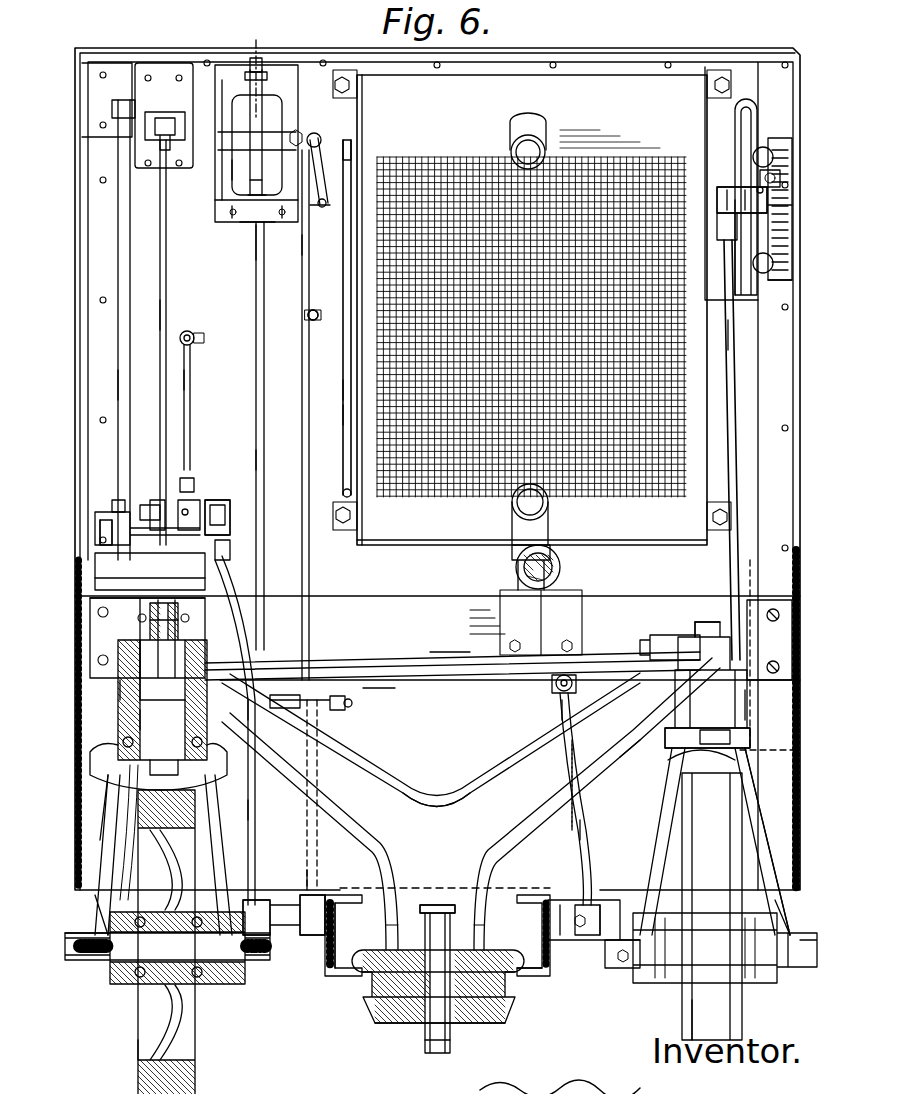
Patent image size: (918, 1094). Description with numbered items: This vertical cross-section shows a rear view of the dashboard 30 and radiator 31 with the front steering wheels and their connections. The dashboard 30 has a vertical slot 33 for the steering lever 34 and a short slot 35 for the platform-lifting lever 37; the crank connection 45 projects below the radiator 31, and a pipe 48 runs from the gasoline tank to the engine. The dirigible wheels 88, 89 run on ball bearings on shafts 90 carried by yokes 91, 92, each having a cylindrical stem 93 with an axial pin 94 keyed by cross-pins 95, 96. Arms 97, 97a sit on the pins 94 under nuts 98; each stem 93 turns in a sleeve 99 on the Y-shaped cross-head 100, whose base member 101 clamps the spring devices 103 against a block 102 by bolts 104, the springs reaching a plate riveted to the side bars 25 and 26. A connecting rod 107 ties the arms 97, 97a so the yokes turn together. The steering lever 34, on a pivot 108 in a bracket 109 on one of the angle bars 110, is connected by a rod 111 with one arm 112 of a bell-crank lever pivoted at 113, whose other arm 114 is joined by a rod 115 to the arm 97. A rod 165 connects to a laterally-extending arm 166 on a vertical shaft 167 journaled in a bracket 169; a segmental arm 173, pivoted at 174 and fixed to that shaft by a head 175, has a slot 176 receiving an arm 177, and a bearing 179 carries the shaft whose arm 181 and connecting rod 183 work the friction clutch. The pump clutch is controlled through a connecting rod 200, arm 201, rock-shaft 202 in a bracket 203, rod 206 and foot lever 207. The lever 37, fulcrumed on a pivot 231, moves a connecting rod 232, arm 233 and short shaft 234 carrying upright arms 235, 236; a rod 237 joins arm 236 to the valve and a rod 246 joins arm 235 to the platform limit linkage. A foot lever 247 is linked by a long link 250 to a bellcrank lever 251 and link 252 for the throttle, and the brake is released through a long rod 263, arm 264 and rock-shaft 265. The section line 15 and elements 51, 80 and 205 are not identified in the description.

The section line 15 is at (232, 38).
The side bar 25 is at (545, 975).
The side bar 26 is at (333, 980).
The dashboard 30 is at (127, 386).
The radiator 31 is at (348, 490).
The vertical slot 33 is at (758, 116).
The steering lever 34 is at (762, 188).
The short slot 35 is at (165, 118).
The lever 37 is at (152, 112).
The crank connection 45 is at (558, 567).
The pipe 48 is at (344, 408).
The fork 51 is at (805, 732).
The lever 80 is at (302, 140).
The dirigible wheel 88 is at (720, 1013).
The dirigible wheel 89 is at (138, 1050).
The shaft 90 is at (100, 950).
The yoke 91 is at (780, 920).
The yoke 92 is at (90, 898).
The cylindrical stem 93 is at (123, 763).
The pin 94 is at (168, 742).
The cross-pin 95 is at (160, 702).
The cross-pin 96 is at (163, 700).
The arm 97 is at (143, 648).
The arm 97a is at (697, 647).
The nut 98 is at (157, 625).
The sleeve 99 is at (127, 688).
The Y-shaped cross-head 100 is at (400, 797).
The base member 101 is at (457, 947).
The block 102 is at (390, 1013).
The spring devices 103 is at (368, 985).
The bolts 104 is at (425, 1045).
The connecting rod 107 is at (447, 657).
The pivot 108 is at (718, 192).
The bracket 109 is at (788, 213).
The angle bar 110 is at (786, 300).
The rod 111 is at (732, 334).
The arm of bell-crank lever 112 is at (748, 750).
The pivot 113 is at (573, 778).
The arm of bell-crank lever 114 is at (640, 733).
The rod 115 is at (363, 688).
The rod 165 is at (337, 706).
The laterally-extending arm 166 is at (293, 703).
The vertical shaft 167 is at (262, 460).
The bracket 169 is at (250, 224).
The segmental arm 173 is at (288, 78).
The pivot 174 is at (268, 66).
The head 175 is at (248, 228).
The slot 176 is at (252, 197).
The arm 177 is at (250, 188).
The bearing 179 is at (240, 170).
The arm 181 is at (305, 243).
The connecting rod 183 is at (308, 322).
The connecting rod 200 is at (198, 340).
The arm 201 is at (190, 378).
The rock-shaft 202 is at (146, 505).
The bracket 203 is at (125, 582).
The lever 205 is at (218, 513).
The rod 206 is at (220, 567).
The foot lever 207 is at (258, 913).
The pivot 231 is at (112, 112).
The connecting rod 232 is at (167, 318).
The arm 233 is at (157, 577).
The short shaft 234 is at (226, 550).
The upright arm 235 is at (108, 533).
The upright arm 236 is at (187, 510).
The rod 237 is at (189, 478).
The rod 246 is at (118, 524).
The foot lever 247 is at (293, 937).
The long link 250 is at (340, 388).
The bellcrank lever 251 is at (352, 140).
The link 252 is at (325, 200).
The long rod 263 is at (553, 688).
The arm 264 is at (558, 708).
The rock-shaft 265 is at (587, 910).